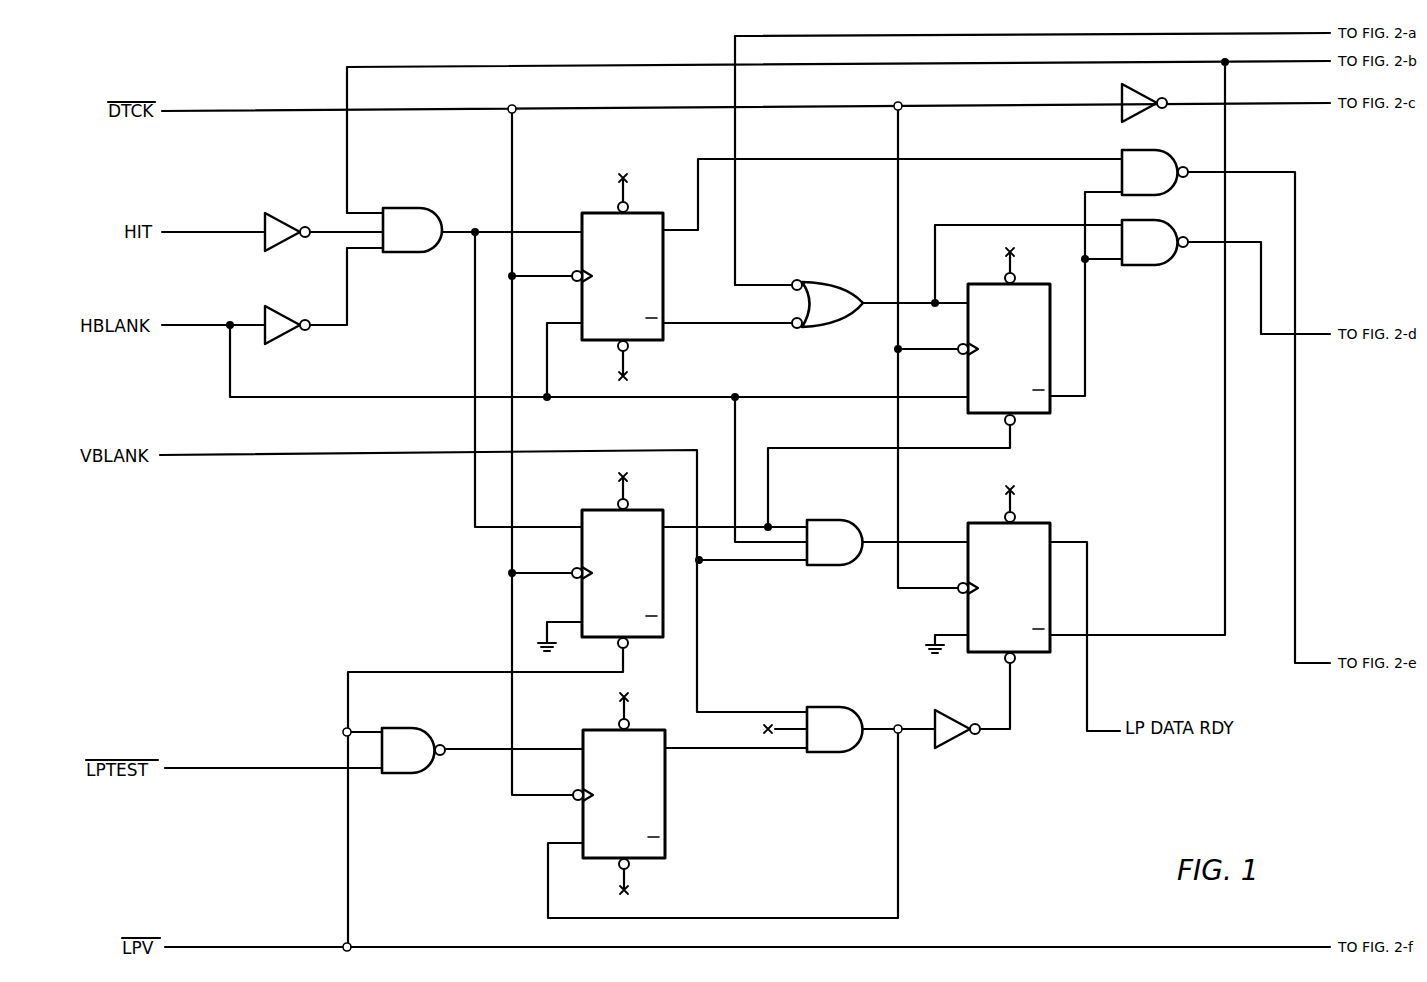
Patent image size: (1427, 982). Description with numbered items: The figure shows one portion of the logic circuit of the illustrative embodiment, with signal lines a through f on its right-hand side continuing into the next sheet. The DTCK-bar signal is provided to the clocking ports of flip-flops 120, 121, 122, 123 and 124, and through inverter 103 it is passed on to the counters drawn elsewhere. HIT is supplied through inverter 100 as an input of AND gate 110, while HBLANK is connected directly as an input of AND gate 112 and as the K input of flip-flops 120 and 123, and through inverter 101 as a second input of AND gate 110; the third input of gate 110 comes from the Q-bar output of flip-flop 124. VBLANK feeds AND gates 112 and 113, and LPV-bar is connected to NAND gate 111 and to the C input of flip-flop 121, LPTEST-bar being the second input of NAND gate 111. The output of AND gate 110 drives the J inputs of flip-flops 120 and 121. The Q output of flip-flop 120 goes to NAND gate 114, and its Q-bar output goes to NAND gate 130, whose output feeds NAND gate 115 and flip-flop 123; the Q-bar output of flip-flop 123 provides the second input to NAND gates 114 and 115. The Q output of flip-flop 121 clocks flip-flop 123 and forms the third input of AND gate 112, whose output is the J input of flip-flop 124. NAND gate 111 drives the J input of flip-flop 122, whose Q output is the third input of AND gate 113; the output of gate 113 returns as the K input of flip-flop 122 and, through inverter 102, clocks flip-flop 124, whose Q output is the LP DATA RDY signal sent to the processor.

The inverter 100 is at (280, 212).
The inverter 101 is at (280, 306).
The inverter 102 is at (956, 712).
The inverter 103 is at (1128, 86).
The AND gate 110 is at (407, 208).
The NAND gate 111 is at (402, 728).
The AND gate 112 is at (836, 520).
The AND gate 113 is at (822, 707).
The NAND gate 114 is at (1133, 150).
The NAND gate 115 is at (1176, 264).
The flip-flop 120 is at (597, 213).
The flip-flop 121 is at (597, 510).
The flip-flop 122 is at (597, 730).
The flip-flop 123 is at (992, 284).
The flip-flop 124 is at (984, 523).
The NAND gate 130 is at (818, 282).